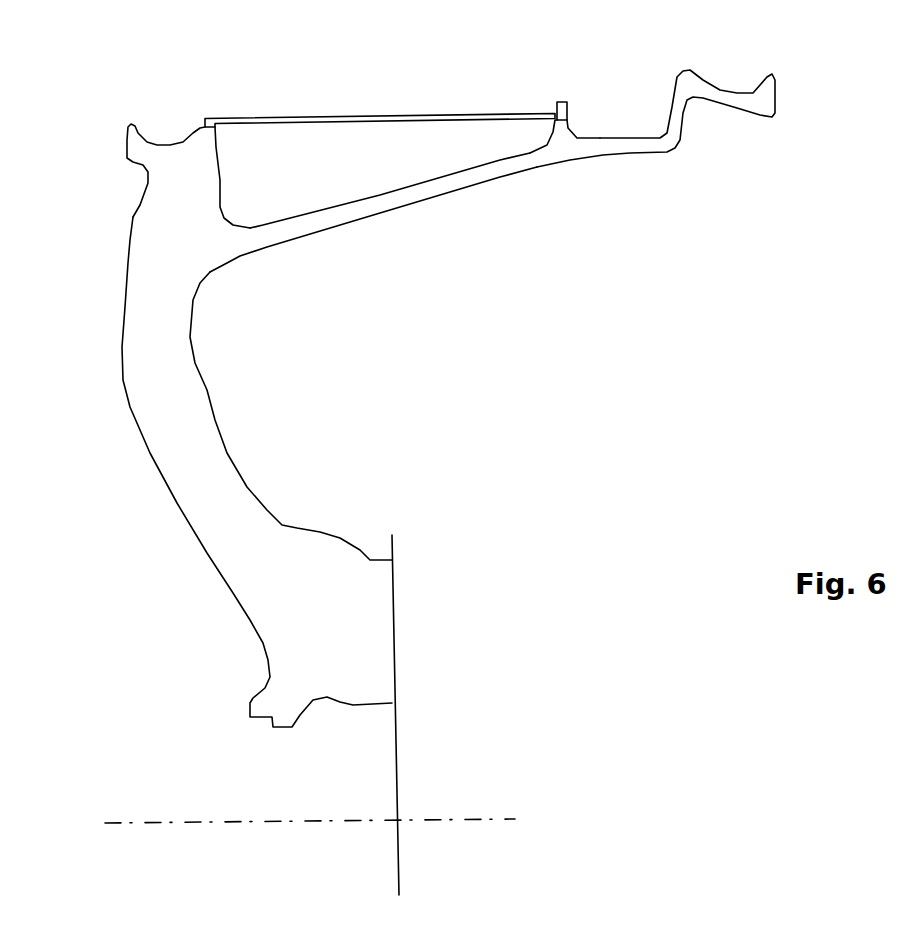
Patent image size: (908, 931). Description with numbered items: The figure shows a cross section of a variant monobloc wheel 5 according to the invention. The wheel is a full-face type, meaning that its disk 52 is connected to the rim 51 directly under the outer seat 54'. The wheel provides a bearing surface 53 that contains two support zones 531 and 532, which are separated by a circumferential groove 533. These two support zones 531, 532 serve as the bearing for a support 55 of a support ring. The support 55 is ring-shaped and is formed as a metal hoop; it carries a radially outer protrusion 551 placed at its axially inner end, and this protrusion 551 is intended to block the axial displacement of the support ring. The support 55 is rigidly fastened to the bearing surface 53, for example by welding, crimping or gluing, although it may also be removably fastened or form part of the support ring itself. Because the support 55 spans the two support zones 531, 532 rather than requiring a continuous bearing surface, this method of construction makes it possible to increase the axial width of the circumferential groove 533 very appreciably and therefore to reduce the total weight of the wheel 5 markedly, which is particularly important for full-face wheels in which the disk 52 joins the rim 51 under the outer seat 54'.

The monobloc wheel 5 is at (466, 404).
The rim 51 is at (527, 158).
The disk 52 is at (200, 435).
The bearing surface 53 is at (346, 92).
The support zone 531 is at (215, 118).
The support zone 532 is at (555, 102).
The circumferential groove 533 is at (352, 192).
The outer seat 54' is at (166, 144).
The support 55 is at (463, 113).
The radially outer protrusion 551 is at (570, 102).